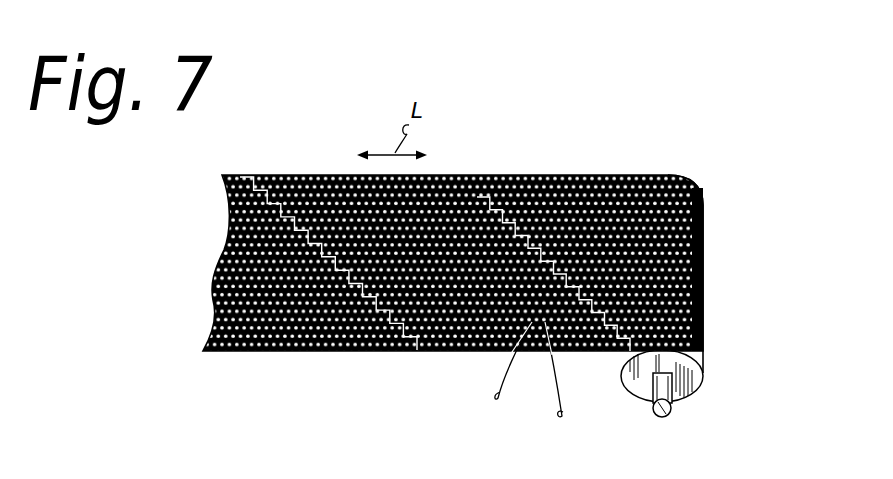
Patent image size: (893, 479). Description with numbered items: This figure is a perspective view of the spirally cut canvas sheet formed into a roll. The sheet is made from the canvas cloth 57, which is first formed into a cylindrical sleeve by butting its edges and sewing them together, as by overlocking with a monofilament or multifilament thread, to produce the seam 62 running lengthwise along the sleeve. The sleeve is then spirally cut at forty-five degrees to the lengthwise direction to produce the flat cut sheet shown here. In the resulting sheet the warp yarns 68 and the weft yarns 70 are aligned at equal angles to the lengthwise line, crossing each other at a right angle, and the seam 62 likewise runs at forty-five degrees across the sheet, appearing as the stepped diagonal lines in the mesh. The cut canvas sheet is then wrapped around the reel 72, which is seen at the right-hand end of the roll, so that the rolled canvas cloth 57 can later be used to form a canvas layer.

The canvas cloth 57 is at (705, 243).
The seam 62 is at (288, 175).
The warp yarns 68 is at (505, 370).
The weft yarns 70 is at (560, 381).
The reel 72 is at (672, 380).